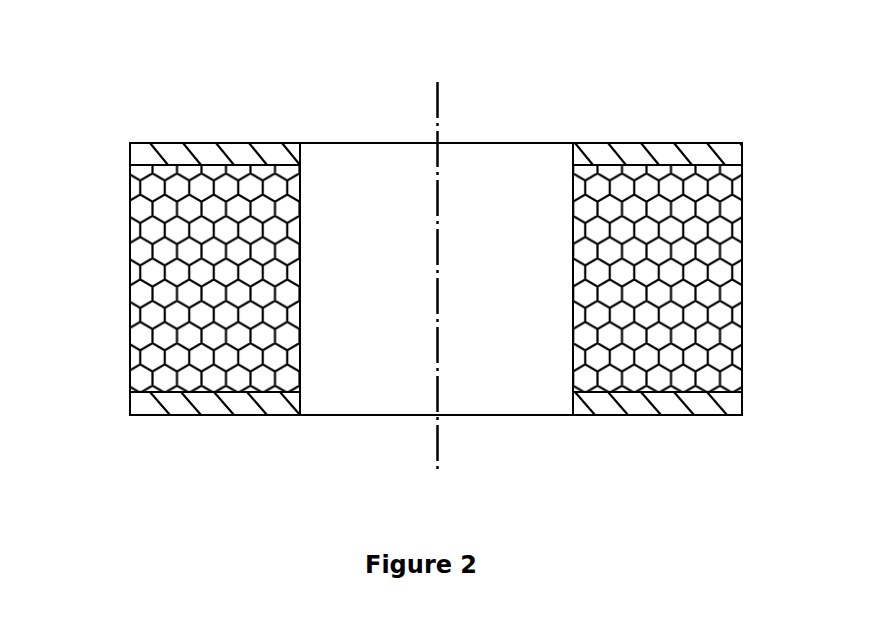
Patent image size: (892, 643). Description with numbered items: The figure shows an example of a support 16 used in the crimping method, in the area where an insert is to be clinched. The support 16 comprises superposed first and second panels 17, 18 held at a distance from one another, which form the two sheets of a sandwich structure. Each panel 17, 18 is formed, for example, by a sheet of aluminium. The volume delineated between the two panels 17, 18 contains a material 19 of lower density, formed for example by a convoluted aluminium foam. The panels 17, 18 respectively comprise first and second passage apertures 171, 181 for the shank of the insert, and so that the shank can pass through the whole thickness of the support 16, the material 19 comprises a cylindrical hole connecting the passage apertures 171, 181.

The support 16 is at (686, 98).
The first panel 17 is at (210, 152).
The first passage aperture 171 is at (301, 147).
The second panel 18 is at (208, 402).
The second passage aperture 181 is at (570, 413).
The material of lower density 19 is at (203, 270).